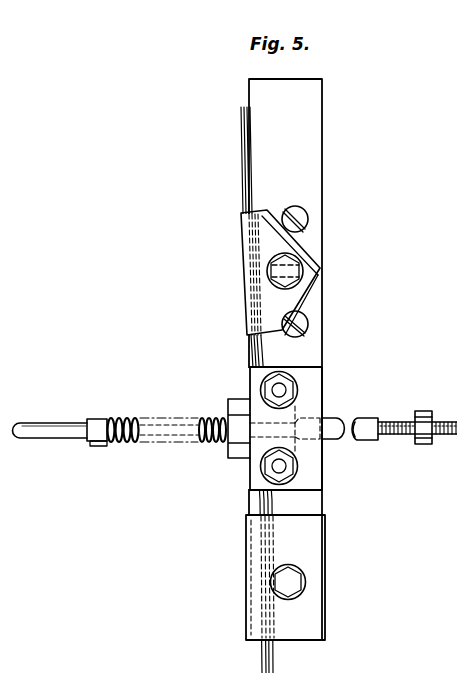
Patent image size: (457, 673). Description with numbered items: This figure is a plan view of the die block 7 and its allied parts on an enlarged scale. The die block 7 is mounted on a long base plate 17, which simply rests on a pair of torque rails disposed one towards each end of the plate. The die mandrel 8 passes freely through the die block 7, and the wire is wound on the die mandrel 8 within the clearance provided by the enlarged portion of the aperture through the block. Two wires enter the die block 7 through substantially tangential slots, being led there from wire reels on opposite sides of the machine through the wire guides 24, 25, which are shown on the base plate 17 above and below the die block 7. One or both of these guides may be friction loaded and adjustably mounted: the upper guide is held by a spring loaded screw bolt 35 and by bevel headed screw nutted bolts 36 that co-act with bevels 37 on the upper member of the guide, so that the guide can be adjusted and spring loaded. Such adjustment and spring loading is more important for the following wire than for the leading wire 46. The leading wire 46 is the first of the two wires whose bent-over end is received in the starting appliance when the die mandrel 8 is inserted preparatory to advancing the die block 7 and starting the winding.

The base plate 17 is at (285, 359).
The spring loaded screw bolt 35 is at (268, 270).
The bevels 37 is at (298, 247).
The bevel headed screw nutted bolts 36 is at (290, 207).
The wire guide 24 is at (306, 269).
The die block 7 is at (241, 398).
The die mandrel 8 is at (45, 432).
The leading wire 46 is at (97, 430).
The wire guide 25 is at (311, 549).